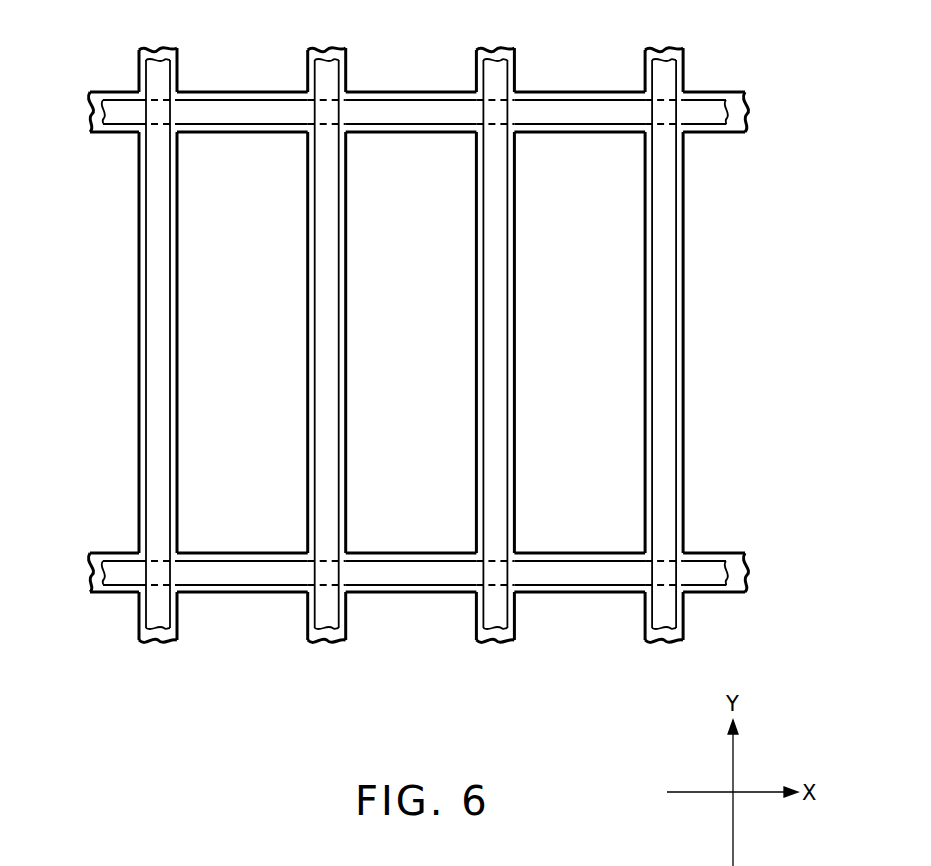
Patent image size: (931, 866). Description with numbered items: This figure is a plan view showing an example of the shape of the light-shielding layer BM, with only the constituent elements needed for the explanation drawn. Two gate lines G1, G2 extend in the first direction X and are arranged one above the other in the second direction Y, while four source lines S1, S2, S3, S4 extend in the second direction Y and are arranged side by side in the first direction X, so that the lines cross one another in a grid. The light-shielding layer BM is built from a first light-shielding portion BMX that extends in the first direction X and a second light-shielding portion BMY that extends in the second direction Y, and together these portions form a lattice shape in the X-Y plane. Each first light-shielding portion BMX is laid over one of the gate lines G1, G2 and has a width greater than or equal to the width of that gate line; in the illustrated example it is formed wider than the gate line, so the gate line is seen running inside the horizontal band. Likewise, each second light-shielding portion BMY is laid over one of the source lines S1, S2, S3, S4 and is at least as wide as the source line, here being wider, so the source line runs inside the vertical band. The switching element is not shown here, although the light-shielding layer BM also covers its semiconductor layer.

The source line S1 is at (160, 66).
The source line S2 is at (329, 66).
The source line S3 is at (497, 66).
The source line S4 is at (666, 66).
The gate line G1 is at (90, 113).
The gate line G2 is at (90, 574).
The light-shielding layer BM is at (136, 632).
The first light-shielding portion BMX is at (750, 112).
The second light-shielding portion BMY is at (158, 636).